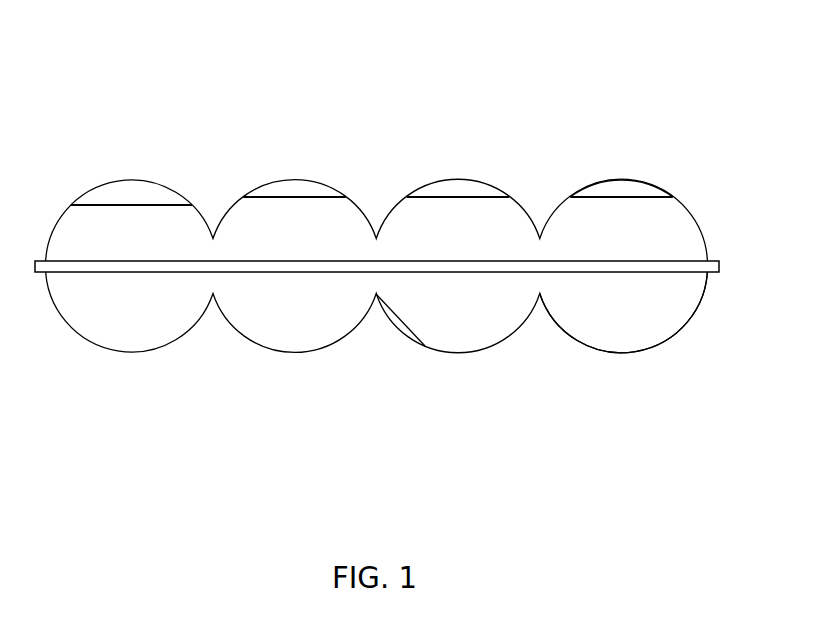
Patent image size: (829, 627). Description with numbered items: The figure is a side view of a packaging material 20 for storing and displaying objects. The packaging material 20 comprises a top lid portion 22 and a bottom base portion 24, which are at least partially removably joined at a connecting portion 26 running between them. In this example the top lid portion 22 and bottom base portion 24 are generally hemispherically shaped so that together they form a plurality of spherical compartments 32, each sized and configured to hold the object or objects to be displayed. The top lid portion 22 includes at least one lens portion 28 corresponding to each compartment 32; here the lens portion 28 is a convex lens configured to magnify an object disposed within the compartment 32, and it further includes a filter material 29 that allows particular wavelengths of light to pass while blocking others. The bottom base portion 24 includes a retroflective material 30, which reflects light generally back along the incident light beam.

The packaging material 20 is at (405, 213).
The top lid portion 22 is at (703, 248).
The bottom base portion 24 is at (668, 352).
The connecting portion 26 is at (721, 270).
The lens portion 28 is at (663, 190).
The filter material 29 is at (575, 188).
The retroflective material 30 is at (384, 312).
The spherical compartments 32 is at (637, 324).